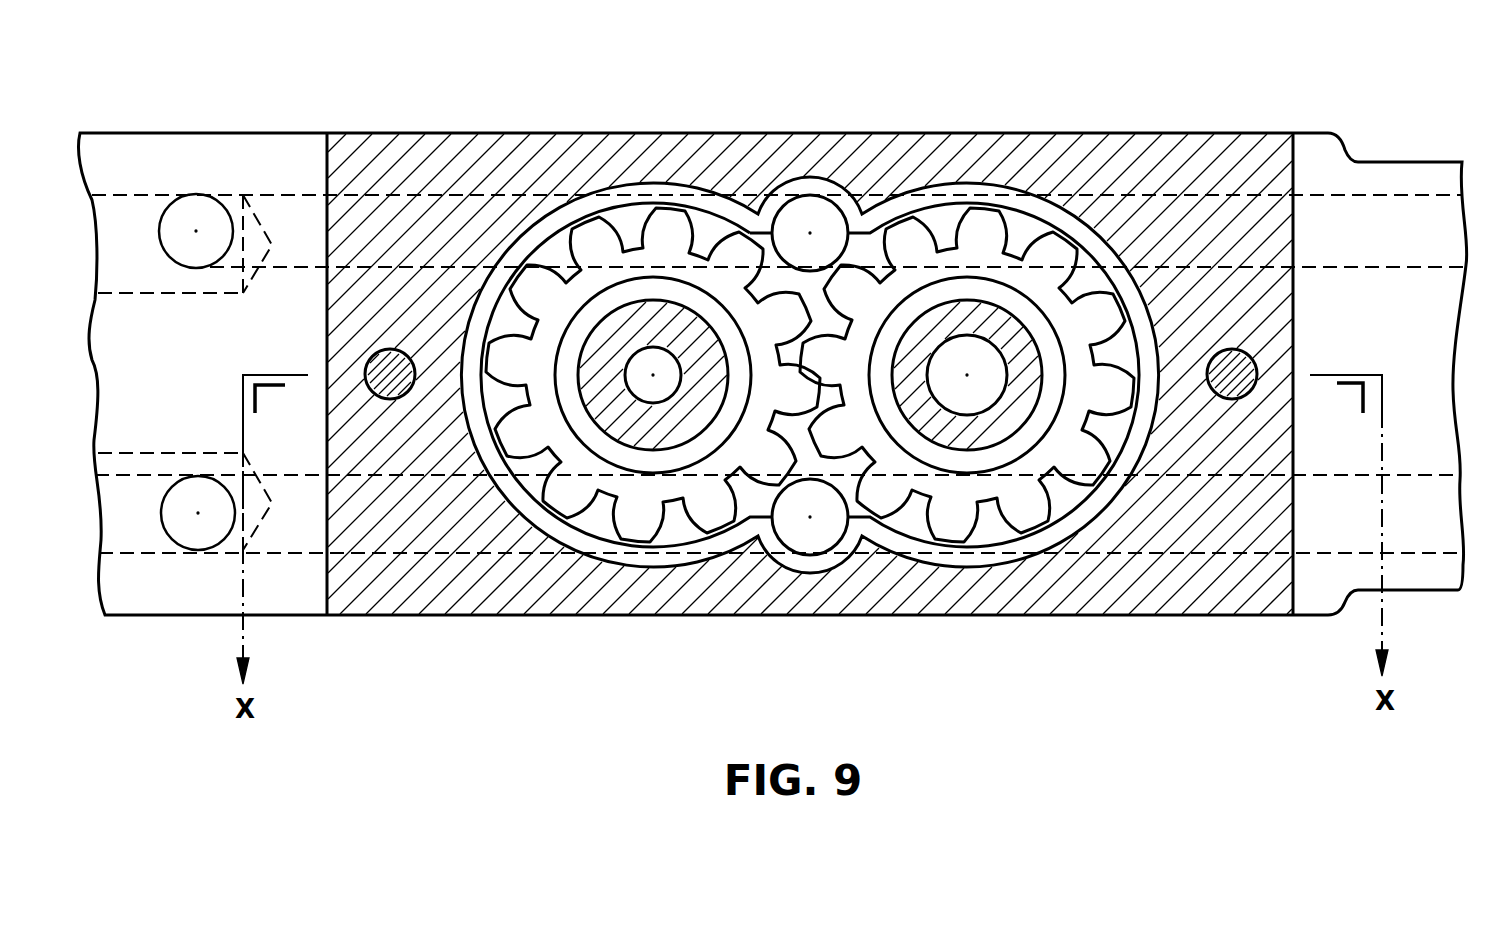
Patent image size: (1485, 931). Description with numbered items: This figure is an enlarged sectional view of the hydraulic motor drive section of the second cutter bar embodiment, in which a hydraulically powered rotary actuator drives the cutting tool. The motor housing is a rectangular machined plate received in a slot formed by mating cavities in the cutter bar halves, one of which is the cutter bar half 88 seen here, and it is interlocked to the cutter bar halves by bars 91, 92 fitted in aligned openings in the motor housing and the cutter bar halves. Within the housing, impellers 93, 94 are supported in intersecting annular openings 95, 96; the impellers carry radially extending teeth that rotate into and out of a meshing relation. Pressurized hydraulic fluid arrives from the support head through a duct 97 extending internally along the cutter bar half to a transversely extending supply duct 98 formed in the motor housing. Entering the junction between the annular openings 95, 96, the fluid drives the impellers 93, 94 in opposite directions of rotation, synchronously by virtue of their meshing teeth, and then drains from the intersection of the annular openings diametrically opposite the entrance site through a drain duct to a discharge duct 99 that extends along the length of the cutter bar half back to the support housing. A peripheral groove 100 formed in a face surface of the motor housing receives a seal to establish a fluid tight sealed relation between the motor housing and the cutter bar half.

The cutter bar half 88 is at (217, 132).
The duct 97 is at (287, 195).
The peripheral groove 100 is at (622, 184).
The supply duct 98 is at (816, 196).
The discharge duct 99 is at (805, 545).
The bar 91 is at (368, 362).
The bar 92 is at (1258, 370).
The impeller 93 is at (673, 495).
The impeller 94 is at (960, 520).
The annular opening 95 is at (560, 541).
The annular opening 96 is at (1097, 488).